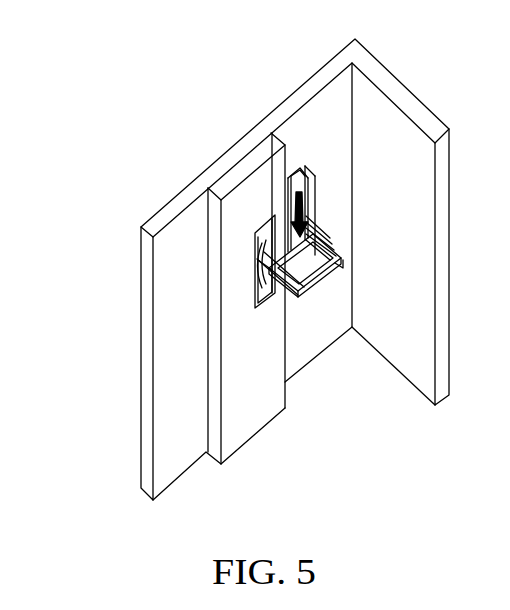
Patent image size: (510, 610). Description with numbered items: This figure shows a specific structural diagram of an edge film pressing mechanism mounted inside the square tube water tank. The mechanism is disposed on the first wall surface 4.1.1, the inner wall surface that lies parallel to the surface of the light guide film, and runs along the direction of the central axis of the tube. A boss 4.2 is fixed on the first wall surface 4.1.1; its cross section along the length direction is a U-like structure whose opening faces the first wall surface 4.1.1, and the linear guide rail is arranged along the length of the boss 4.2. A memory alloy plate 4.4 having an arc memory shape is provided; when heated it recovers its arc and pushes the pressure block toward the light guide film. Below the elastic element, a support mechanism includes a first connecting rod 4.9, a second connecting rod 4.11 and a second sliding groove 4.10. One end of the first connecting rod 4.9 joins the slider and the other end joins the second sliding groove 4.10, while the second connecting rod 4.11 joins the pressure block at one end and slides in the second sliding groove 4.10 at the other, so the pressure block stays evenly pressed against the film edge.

The first wall surface 4.1.1 is at (192, 215).
The memory alloy plate 4.4 is at (262, 262).
The boss 4.2 is at (268, 224).
The first connecting rod 4.9 is at (289, 222).
The second sliding groove 4.10 is at (282, 226).
The second connecting rod 4.11 is at (299, 192).